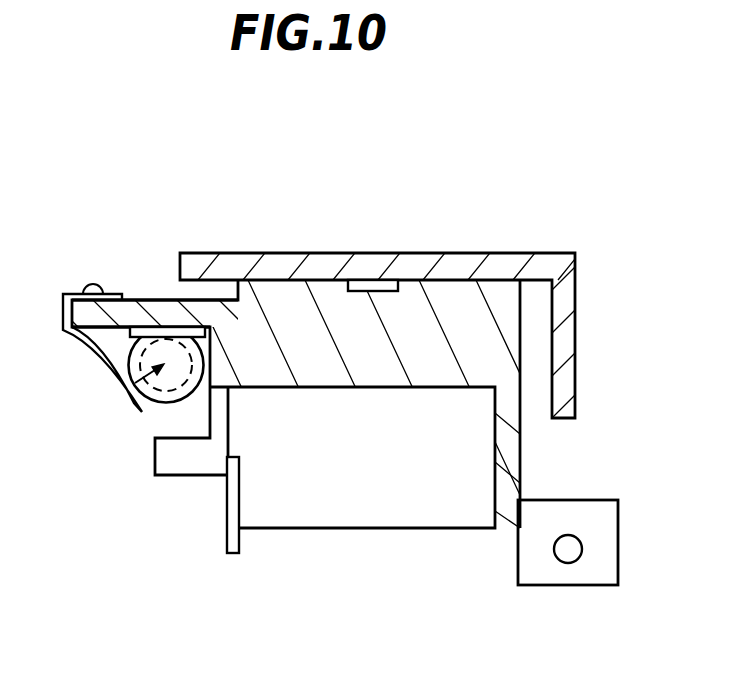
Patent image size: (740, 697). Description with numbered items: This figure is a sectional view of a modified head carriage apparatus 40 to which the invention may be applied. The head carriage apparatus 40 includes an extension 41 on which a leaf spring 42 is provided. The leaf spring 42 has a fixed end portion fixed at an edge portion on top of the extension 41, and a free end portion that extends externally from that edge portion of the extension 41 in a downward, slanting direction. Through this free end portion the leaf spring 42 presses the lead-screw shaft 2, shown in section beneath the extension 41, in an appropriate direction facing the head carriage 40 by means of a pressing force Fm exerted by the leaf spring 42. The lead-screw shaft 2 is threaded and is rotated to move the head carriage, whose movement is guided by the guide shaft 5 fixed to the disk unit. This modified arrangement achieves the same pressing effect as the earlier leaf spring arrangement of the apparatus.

The head carriage apparatus 40 is at (412, 250).
The extension 41 is at (147, 298).
The leaf spring 42 is at (111, 371).
The lead-screw shaft 2 is at (172, 403).
The guide shaft 5 is at (562, 564).